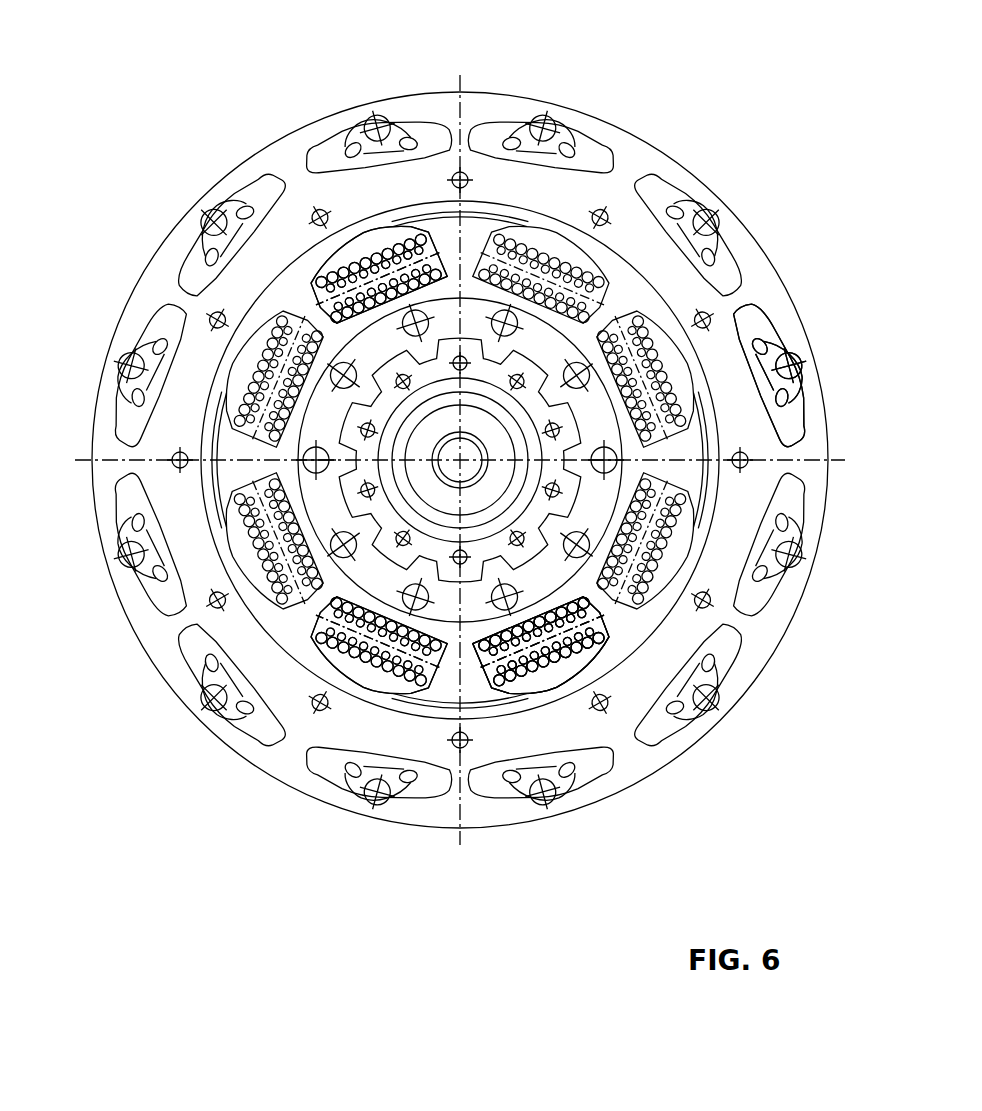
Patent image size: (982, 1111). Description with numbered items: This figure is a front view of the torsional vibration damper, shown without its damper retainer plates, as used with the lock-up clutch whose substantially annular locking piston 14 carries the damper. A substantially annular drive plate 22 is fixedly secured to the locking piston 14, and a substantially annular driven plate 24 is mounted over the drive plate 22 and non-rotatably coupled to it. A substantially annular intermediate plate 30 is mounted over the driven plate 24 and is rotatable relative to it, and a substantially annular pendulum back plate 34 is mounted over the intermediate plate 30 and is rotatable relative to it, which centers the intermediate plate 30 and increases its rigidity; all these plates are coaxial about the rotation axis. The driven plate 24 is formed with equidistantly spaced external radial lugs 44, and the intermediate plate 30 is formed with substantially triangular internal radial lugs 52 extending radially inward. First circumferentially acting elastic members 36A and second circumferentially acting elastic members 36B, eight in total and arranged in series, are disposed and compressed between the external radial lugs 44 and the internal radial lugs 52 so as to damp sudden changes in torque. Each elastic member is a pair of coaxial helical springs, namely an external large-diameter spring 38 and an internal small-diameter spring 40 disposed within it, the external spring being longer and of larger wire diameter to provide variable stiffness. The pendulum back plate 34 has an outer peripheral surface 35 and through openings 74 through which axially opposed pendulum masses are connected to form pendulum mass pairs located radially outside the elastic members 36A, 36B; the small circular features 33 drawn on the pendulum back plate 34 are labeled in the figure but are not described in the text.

The locking piston 14 is at (492, 435).
The drive plate 22 is at (522, 373).
The driven plate 24 is at (370, 343).
The intermediate plate 30 is at (537, 702).
The rivet 33 is at (748, 463).
The pendulum back plate 34 is at (632, 157).
The outer peripheral surface 35 is at (712, 190).
The first circumferentially acting elastic members 36A is at (248, 544).
The second circumferentially acting elastic members 36B is at (368, 667).
The external large-diameter spring 38 is at (245, 523).
The internal small-diameter spring 40 is at (332, 586).
The external radial lugs 44 is at (253, 450).
The internal radial lugs 52 is at (310, 304).
The through opening 74 is at (750, 428).